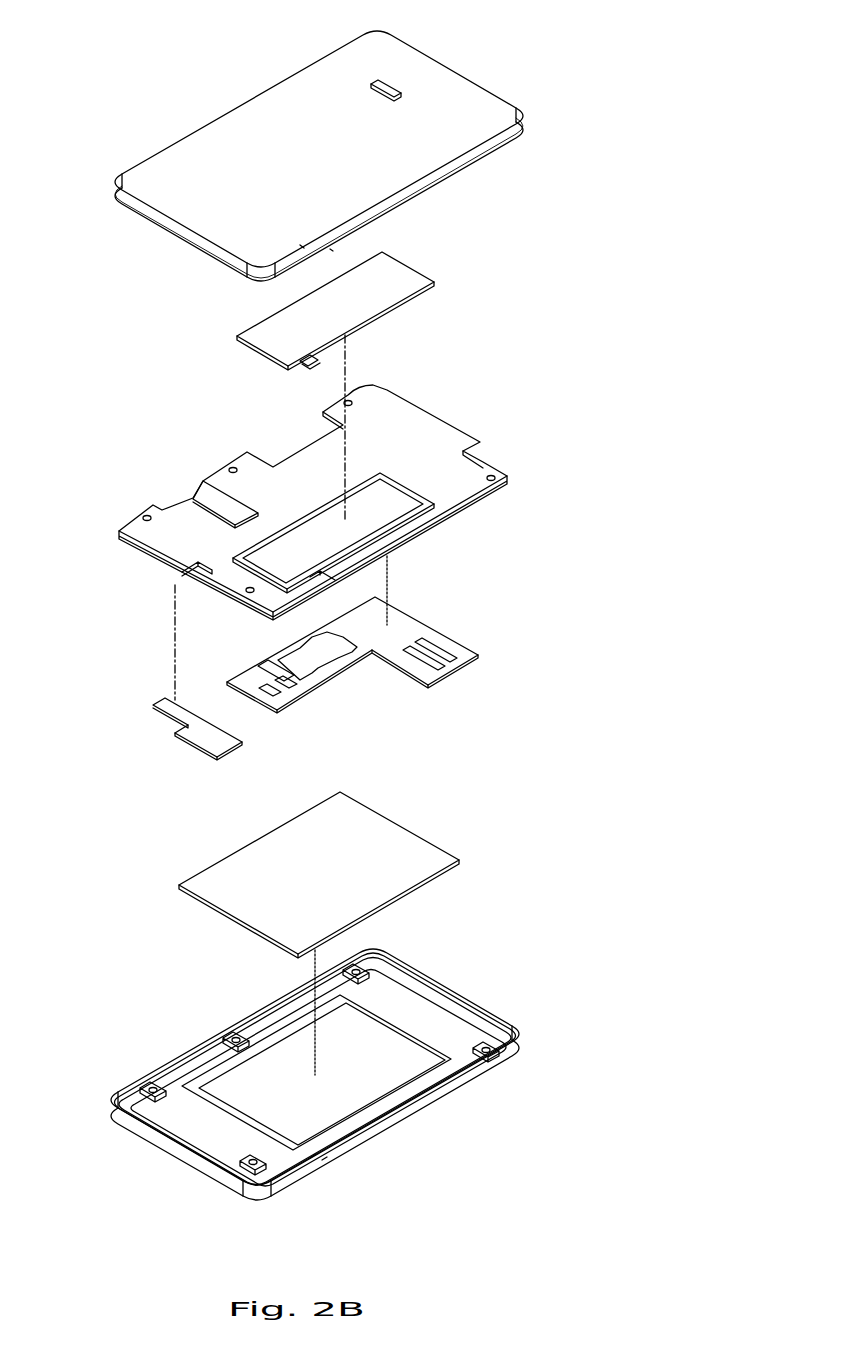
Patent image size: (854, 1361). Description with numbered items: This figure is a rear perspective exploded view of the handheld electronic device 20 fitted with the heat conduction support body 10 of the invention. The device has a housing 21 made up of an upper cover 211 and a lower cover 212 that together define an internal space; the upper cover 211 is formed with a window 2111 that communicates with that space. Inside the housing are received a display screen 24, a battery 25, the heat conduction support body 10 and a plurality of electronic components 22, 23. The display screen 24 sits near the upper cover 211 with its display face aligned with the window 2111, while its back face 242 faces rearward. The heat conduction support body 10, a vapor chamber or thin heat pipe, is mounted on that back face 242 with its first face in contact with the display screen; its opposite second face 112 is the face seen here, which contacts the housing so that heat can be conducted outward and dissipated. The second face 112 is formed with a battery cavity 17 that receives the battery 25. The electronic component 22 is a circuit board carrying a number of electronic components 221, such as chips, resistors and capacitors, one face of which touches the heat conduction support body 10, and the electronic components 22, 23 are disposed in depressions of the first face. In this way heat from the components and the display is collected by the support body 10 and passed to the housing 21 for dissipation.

The handheld electronic device 20 is at (667, 26).
The housing 21 is at (622, 248).
The upper cover 211 is at (172, 1147).
The lower cover 212 is at (428, 87).
The window 2111 is at (343, 1103).
The heat conduction support body 10 is at (460, 407).
The second face 112 is at (222, 477).
The battery cavity 17 is at (388, 512).
The electronic component 22 is at (425, 632).
The electronic components 221 is at (310, 657).
The electronic component 23 is at (208, 737).
The display screen 24 is at (223, 873).
The back face 242 is at (393, 850).
The battery 25 is at (392, 278).